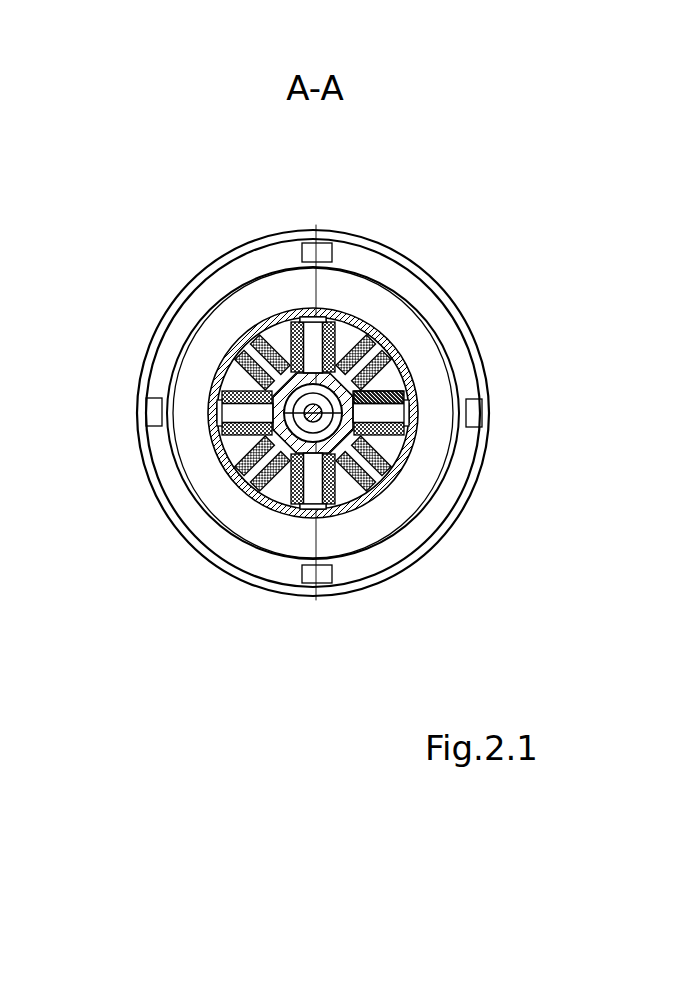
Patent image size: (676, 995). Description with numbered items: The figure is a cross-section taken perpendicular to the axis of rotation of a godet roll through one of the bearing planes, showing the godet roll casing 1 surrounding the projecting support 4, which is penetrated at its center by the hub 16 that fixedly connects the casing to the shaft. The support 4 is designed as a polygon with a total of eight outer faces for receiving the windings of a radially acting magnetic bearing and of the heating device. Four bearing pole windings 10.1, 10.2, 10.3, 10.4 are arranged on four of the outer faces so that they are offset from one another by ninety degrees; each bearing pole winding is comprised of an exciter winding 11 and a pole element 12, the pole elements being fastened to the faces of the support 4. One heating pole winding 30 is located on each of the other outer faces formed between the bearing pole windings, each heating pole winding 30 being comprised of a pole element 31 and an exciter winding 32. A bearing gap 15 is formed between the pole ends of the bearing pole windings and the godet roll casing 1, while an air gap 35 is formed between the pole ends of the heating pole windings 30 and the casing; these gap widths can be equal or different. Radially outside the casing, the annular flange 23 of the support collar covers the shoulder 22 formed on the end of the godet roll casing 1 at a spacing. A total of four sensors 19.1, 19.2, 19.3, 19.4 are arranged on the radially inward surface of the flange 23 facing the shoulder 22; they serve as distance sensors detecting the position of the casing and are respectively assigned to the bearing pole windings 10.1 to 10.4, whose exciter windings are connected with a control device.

The godet roll casing 1 is at (322, 409).
The projecting support 4 is at (335, 360).
The bearing pole winding 10.1 is at (227, 261).
The bearing pole winding 10.2 is at (461, 407).
The bearing pole winding 10.3 is at (419, 560).
The bearing pole winding 10.4 is at (212, 463).
The exciter winding 11 is at (348, 510).
The pole element 12 is at (333, 500).
The bearing gap 15 is at (312, 320).
The hub 16 is at (375, 393).
The sensor 19.1 is at (320, 250).
The sensor 19.2 is at (100, 413).
The sensor 19.3 is at (313, 573).
The sensor 19.4 is at (155, 405).
The shoulder 22 is at (193, 360).
The annular flange 23 is at (402, 265).
The heating pole winding 30 is at (173, 497).
The pole element 31 is at (257, 483).
The exciter winding 32 is at (275, 488).
The air gap 35 is at (395, 343).